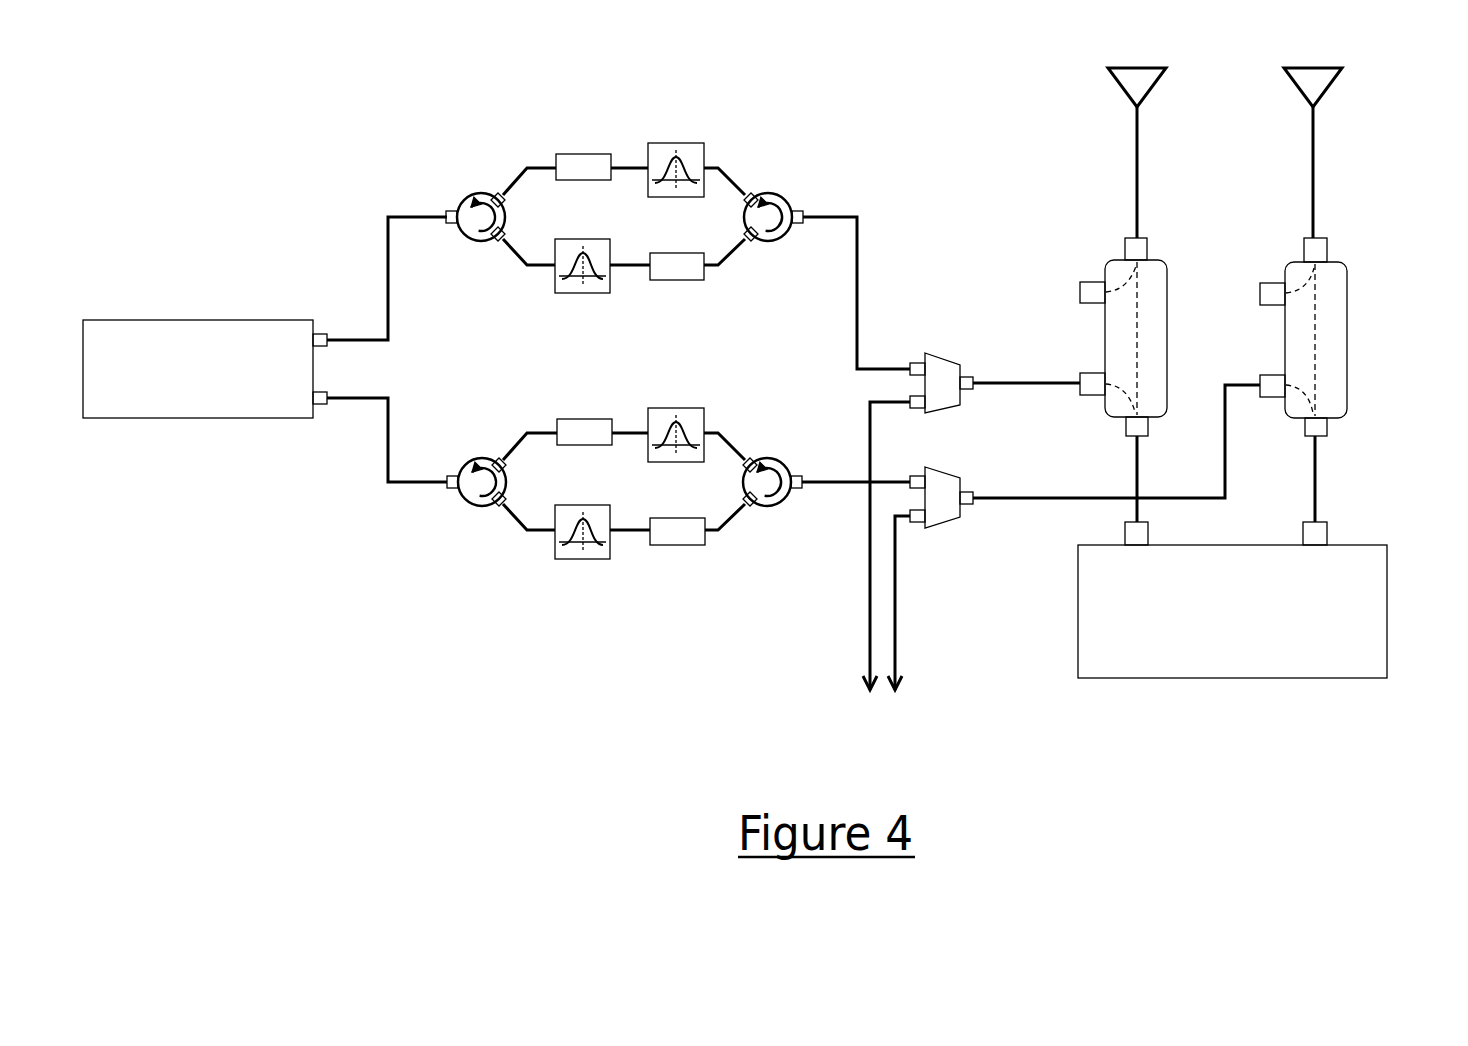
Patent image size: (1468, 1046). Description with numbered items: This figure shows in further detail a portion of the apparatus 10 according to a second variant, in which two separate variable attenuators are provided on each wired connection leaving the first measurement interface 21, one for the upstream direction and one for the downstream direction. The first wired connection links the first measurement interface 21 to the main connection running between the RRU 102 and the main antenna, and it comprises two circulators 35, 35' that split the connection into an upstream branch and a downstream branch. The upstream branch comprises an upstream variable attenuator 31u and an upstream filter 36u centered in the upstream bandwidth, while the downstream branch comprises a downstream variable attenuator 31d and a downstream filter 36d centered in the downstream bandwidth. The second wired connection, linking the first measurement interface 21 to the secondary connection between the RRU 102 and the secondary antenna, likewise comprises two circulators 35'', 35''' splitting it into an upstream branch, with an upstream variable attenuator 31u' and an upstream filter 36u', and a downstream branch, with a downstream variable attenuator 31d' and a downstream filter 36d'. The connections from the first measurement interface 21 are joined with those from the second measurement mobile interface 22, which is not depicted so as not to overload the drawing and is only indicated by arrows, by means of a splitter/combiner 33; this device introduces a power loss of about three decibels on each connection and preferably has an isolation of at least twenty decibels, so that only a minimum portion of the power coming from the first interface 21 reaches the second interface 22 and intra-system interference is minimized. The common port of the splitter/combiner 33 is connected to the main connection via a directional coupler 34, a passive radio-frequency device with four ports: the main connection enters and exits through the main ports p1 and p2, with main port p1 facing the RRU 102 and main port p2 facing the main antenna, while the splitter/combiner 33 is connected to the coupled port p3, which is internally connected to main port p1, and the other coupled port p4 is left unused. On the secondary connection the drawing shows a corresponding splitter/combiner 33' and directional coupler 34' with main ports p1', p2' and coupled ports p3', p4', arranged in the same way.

The antenna system 10 is at (1398, 198).
The first measurement interface 21 is at (198, 319).
The second measurement mobile interface 22 is at (884, 564).
The downstream variable attenuator 31d is at (583, 134).
The upstream variable attenuator 31u is at (683, 296).
The downstream variable attenuator 31d' is at (579, 408).
The upstream variable attenuator 31u' is at (684, 560).
The splitter/combiner 33 is at (941, 361).
The coupler (second path) 33' is at (947, 520).
The directional coupler 34 is at (1162, 338).
The four-port circulator (second) 34' is at (1344, 340).
The circulator 35 is at (468, 239).
The circulator 35' is at (788, 195).
The circulator 35'' is at (464, 503).
The circulator 35''' is at (790, 459).
The downstream filter 36d is at (680, 143).
The upstream filter 36u is at (576, 290).
The downstream filter 36d' is at (701, 414).
The upstream filter 36u' is at (575, 555).
The RRU 102 is at (1388, 615).
The main port p1 is at (1162, 435).
The main port p2 is at (1159, 245).
The coupled port p3 is at (1088, 406).
The coupled port p4 is at (1086, 273).
The circulator port 1 (second) p1' is at (1343, 435).
The circulator port 2 (second) p2' is at (1340, 244).
The circulator port 3 (second) p3' is at (1267, 407).
The circulator port 4 (second) p4' is at (1266, 273).